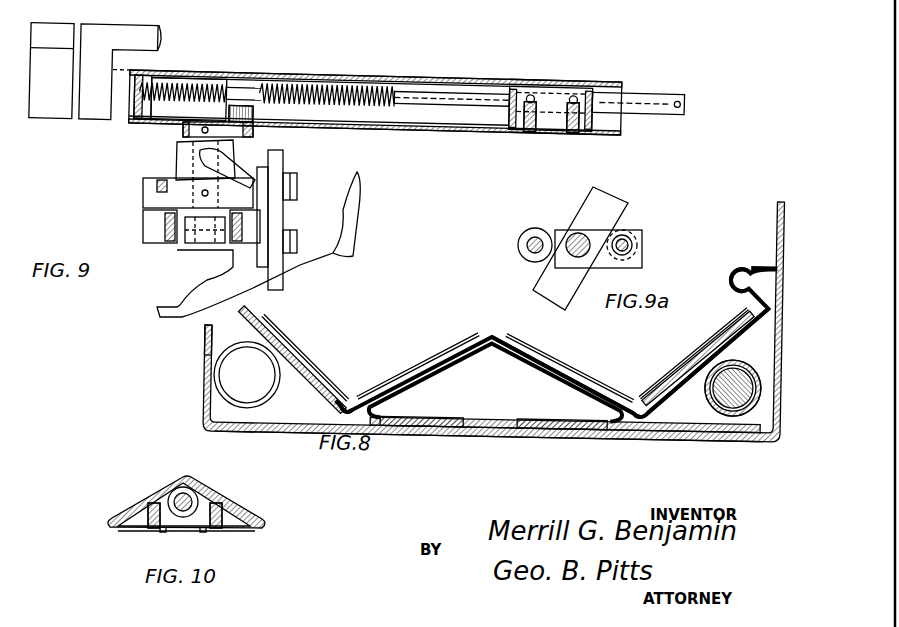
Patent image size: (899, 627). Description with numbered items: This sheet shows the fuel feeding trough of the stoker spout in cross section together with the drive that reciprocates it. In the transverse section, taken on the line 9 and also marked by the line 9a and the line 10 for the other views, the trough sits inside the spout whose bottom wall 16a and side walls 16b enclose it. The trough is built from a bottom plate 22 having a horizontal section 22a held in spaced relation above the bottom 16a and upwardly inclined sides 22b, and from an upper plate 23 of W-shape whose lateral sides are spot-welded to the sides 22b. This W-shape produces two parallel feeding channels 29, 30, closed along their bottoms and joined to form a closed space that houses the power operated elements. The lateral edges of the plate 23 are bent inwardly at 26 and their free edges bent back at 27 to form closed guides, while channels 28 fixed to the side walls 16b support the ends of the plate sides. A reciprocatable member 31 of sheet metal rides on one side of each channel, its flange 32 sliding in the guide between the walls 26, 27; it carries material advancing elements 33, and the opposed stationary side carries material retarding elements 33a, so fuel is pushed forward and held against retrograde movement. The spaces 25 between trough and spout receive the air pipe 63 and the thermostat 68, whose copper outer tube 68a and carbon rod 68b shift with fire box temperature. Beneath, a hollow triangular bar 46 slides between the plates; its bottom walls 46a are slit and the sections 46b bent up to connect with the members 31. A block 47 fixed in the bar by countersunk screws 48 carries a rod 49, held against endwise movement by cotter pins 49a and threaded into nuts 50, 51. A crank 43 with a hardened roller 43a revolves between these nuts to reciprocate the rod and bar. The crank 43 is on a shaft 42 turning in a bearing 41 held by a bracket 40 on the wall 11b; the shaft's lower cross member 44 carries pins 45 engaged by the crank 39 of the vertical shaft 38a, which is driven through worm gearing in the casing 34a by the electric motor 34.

In FIG. 9, the bent sections of bottom walls 46b is at (63, 106).
In FIG. 9, the reciprocatable members 31 is at (160, 46).
In FIG. 8, the reciprocatable members 31 is at (347, 402).
In FIG. 9, the hollow bar 46 is at (376, 89).
In FIG. 8, the hollow bar 46 is at (496, 381).
In FIG. 9, the nut 50 is at (195, 78).
In FIG. 9, the hardened steel roller 43a is at (247, 103).
In FIG. 9, the nut 51 is at (290, 80).
In FIG. 9, the rod 49 is at (446, 98).
In FIG. 10, the rod 49 is at (198, 490).
In FIG. 9, the cotter pins 49a is at (508, 99).
In FIG. 9, the block 47 is at (544, 93).
In FIG. 10, the block 47 is at (186, 516).
In FIG. 9, the countersunk screws 48 is at (572, 124).
In FIG. 10, the countersunk screws 48 is at (150, 530).
In FIG. 9, the section line 10- 10 is at (640, 64).
In FIG. 9, the crank 43 is at (182, 130).
In FIG. 9, the bearing 41 is at (176, 152).
In FIG. 9, the shaft 42 is at (200, 158).
In FIG. 9a, the shaft 42 is at (588, 240).
In FIG. 9, the cross member 44 is at (143, 190).
In FIG. 9a, the cross member 44 is at (600, 268).
In FIG. 9, the bracket 40 is at (270, 163).
In FIG. 9, the depending pins 45 is at (150, 240).
In FIG. 9a, the depending pins 45 is at (540, 236).
In FIG. 9, the crank 39 is at (195, 243).
In FIG. 9a, the crank 39 is at (605, 194).
In FIG. 9, the vertical shaft 38a is at (202, 275).
In FIG. 9, the plate 11b is at (273, 279).
In FIG. 9, the electric motor 34 is at (355, 240).
In FIG. 9, the section line 9a- 9a is at (298, 182).
In FIG. 8, the space 25 is at (494, 316).
In FIG. 8, the pipe 63 is at (212, 333).
In FIG. 8, the bottom wall 16a is at (245, 430).
In FIG. 8, the side walls 16b is at (204, 386).
In FIG. 8, the upper plate 23 is at (610, 430).
In FIG. 8, the material advancing elements 33 is at (288, 346).
In FIG. 8, the feeding channel 29 is at (556, 341).
In FIG. 8, the feeding channel 30 is at (562, 375).
In FIG. 8, the material retarding elements 33a is at (437, 360).
In FIG. 8, the bottom walls 46a is at (525, 413).
In FIG. 8, the bottom plate 22 is at (697, 365).
In FIG. 8, the horizontal section 22a is at (615, 418).
In FIG. 8, the upwardly inclined sides 22b is at (656, 406).
In FIG. 8, the channels 28 is at (740, 312).
In FIG. 8, the bent-back edges 27 is at (729, 270).
In FIG. 8, the flange 32 is at (733, 260).
In FIG. 8, the inwardly bent portions 26 is at (745, 259).
In FIG. 8, the thermostat 68 is at (735, 378).
In FIG. 8, the outer tube 68a is at (736, 405).
In FIG. 8, the rod 68b is at (724, 406).
In FIG. 8, the section line 9- 9 is at (487, 317).
In FIG. 8, the casing 34a is at (160, 318).